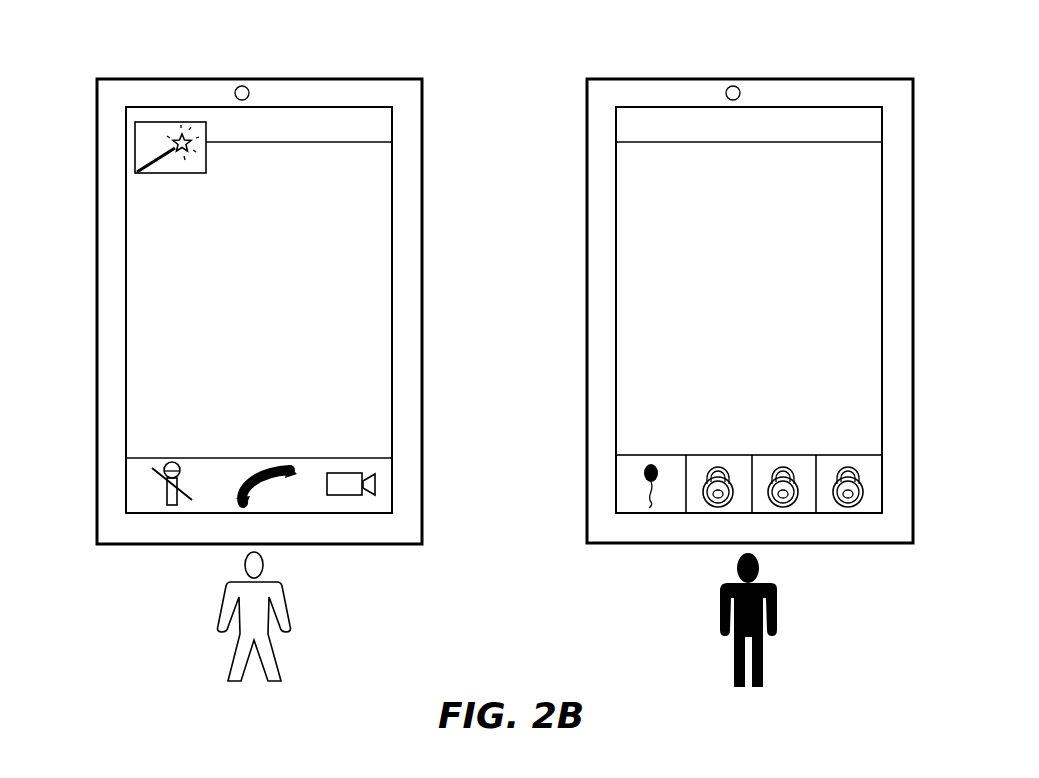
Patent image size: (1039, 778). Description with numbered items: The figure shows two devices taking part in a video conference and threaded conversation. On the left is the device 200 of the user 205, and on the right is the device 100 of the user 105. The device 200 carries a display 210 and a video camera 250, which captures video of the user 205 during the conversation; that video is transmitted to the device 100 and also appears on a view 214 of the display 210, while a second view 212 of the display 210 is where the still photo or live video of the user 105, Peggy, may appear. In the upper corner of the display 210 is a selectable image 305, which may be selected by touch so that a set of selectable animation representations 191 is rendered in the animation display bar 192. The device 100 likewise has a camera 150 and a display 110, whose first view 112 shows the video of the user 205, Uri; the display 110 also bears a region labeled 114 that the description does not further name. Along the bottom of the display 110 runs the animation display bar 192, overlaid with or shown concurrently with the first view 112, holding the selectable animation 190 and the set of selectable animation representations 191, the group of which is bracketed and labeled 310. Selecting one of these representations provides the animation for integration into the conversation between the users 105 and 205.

The device 100 is at (823, 66).
The user 105 is at (766, 710).
The display 110 is at (675, 107).
The first view 112 is at (865, 267).
The touch screen 114 is at (867, 207).
The camera 150 is at (733, 86).
The selectable animation 190 is at (635, 505).
The set of selectable animation representations 191 is at (791, 446).
The animation display bar 192 is at (868, 502).
The device 200 is at (300, 70).
The user 205 is at (271, 712).
The display 210 is at (173, 107).
The second view 212 is at (372, 287).
The view 214 is at (392, 205).
The video camera 250 is at (241, 86).
The selectable image 305 is at (150, 121).
The lock icons group 310 is at (837, 524).